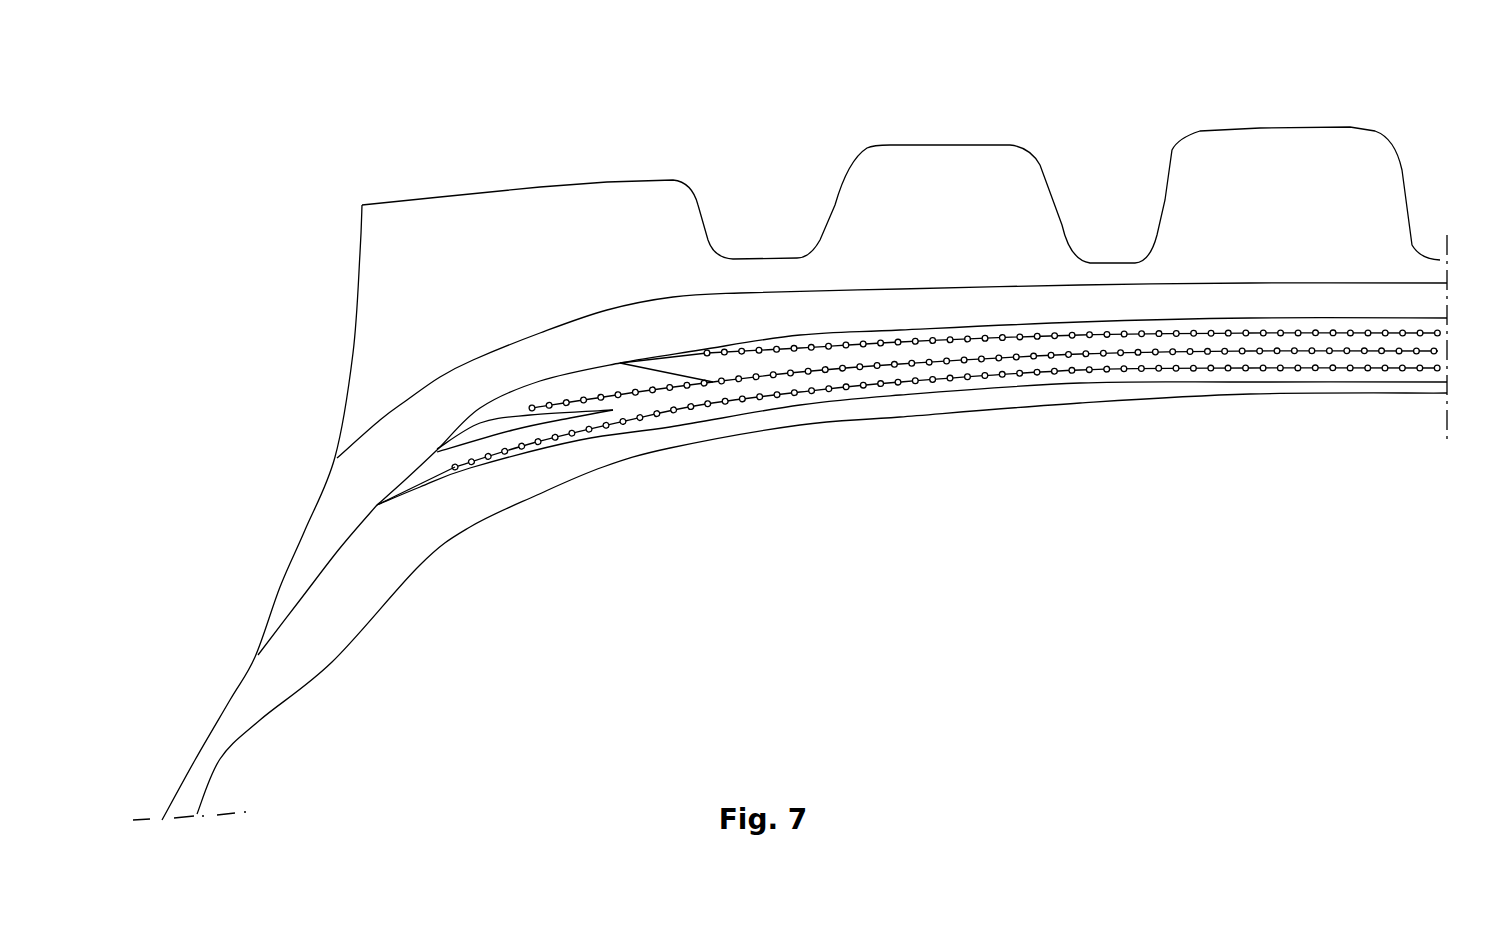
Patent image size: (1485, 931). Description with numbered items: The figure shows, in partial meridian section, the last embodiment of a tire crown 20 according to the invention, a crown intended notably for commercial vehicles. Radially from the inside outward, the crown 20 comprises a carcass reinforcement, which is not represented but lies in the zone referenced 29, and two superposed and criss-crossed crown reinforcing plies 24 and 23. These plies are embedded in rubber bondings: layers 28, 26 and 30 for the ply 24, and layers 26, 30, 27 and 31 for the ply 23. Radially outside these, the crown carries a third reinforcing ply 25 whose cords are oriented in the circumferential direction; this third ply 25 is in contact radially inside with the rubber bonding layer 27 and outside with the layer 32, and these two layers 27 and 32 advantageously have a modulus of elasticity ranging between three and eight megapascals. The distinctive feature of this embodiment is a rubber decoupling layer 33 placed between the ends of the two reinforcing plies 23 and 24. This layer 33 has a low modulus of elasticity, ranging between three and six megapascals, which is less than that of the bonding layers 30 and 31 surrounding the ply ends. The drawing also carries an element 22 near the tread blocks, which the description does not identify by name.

The tire crown 20 is at (622, 151).
The tread 22 is at (663, 238).
The crown reinforcing ply 23 is at (963, 357).
The crown reinforcing ply 24 is at (925, 378).
The third reinforcing ply 25 is at (897, 341).
The rubber bonding 26 is at (1010, 373).
The rubber bonding layer 27 is at (1042, 345).
The rubber bonding 28 is at (1148, 375).
The carcass reinforcement zone 29 is at (1217, 392).
The rubber bonding 30 is at (655, 395).
The rubber bonding 31 is at (558, 386).
The rubber layer 32 is at (1182, 330).
The rubber decoupling layer 33 is at (487, 438).